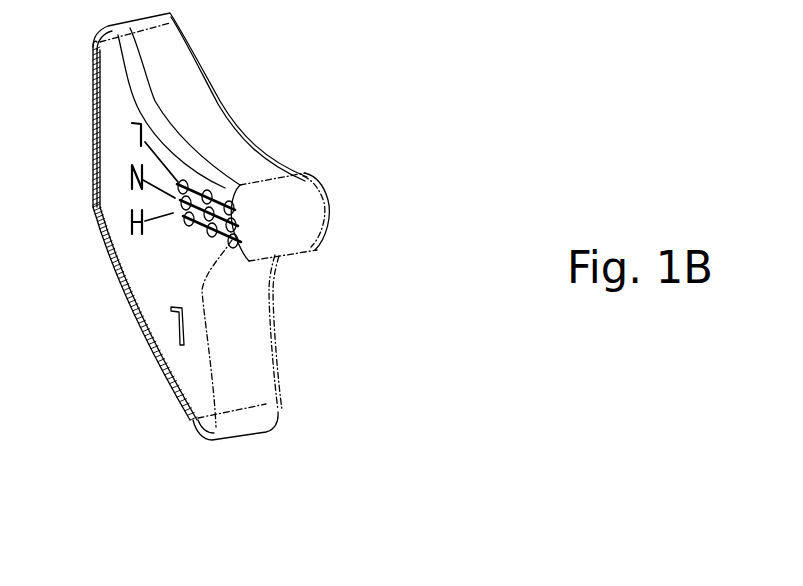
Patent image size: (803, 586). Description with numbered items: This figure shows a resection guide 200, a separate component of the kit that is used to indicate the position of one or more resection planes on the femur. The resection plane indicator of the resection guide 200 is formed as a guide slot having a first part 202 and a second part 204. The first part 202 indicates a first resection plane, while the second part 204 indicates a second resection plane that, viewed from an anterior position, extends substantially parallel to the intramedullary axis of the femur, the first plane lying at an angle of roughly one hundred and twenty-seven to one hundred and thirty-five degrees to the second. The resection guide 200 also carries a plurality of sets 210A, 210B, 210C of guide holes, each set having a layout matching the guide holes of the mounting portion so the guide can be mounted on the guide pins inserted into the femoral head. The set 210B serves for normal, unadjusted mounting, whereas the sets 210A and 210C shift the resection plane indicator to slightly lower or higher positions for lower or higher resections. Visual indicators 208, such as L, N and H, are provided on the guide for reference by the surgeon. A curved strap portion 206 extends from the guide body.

The resection guide 200 is at (227, 378).
The first part of the guide slot 202 is at (183, 400).
The second part of the guide slot 204 is at (100, 86).
The curved strap 206 is at (208, 297).
The visual indicators 208 is at (137, 240).
The set of guide holes 210A is at (237, 210).
The set of guide holes 210B is at (240, 230).
The set of guide holes 210C is at (238, 245).